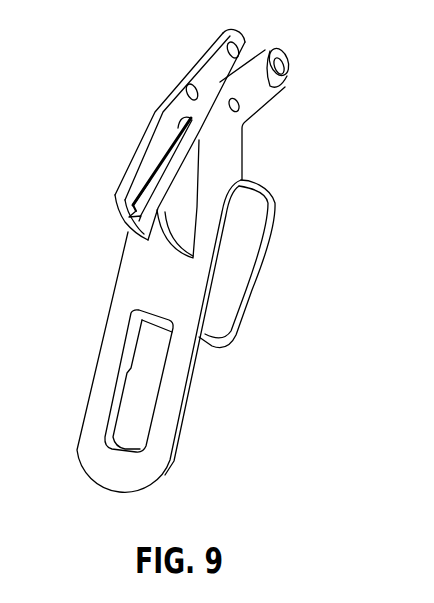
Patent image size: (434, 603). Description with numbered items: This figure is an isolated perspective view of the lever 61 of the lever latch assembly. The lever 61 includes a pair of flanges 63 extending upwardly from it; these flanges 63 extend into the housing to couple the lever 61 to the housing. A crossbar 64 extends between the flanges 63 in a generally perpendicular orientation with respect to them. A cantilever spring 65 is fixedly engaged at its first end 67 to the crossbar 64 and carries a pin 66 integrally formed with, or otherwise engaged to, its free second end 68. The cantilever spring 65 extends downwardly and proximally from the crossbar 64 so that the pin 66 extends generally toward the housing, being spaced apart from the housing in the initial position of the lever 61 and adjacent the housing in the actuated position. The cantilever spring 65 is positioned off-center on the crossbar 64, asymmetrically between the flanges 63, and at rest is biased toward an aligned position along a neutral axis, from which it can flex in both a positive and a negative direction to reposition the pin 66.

The lever 61 is at (157, 430).
The flanges 63 is at (245, 97).
The crossbar 64 is at (196, 118).
The cantilever spring 65 is at (162, 177).
The pin 66 is at (130, 220).
The first end 67 is at (177, 156).
The free second end 68 is at (137, 196).